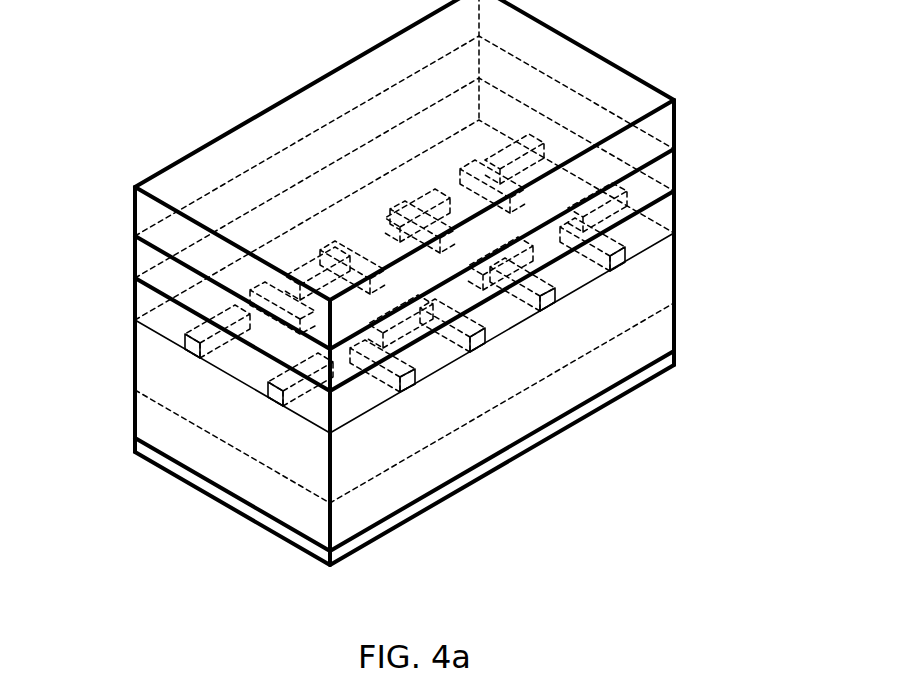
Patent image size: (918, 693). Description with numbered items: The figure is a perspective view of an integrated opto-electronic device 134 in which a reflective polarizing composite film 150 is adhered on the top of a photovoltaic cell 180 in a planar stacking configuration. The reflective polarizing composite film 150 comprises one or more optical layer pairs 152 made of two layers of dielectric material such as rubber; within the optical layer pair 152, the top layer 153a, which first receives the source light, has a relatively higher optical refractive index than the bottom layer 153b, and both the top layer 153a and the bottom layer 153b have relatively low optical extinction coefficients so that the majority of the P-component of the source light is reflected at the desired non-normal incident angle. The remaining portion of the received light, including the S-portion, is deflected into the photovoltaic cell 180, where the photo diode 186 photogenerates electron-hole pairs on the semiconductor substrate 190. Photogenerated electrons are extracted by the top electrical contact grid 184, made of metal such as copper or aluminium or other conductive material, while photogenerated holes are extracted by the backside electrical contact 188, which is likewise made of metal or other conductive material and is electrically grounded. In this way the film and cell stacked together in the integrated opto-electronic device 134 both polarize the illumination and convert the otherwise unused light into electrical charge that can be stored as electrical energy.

The integrated opto-electronic device 134 is at (757, 102).
The reflective polarizing composite film 150 is at (688, 102).
The optical layer pair 152 is at (439, 234).
The top layer 153a is at (135, 203).
The bottom layer 153b is at (135, 262).
The photovoltaic cell 180 is at (688, 195).
The top electrical contact grid 184 is at (190, 346).
The photo diode 186 is at (125, 318).
The backside electrical contact 188 is at (560, 428).
The semiconductor substrate 190 is at (237, 472).